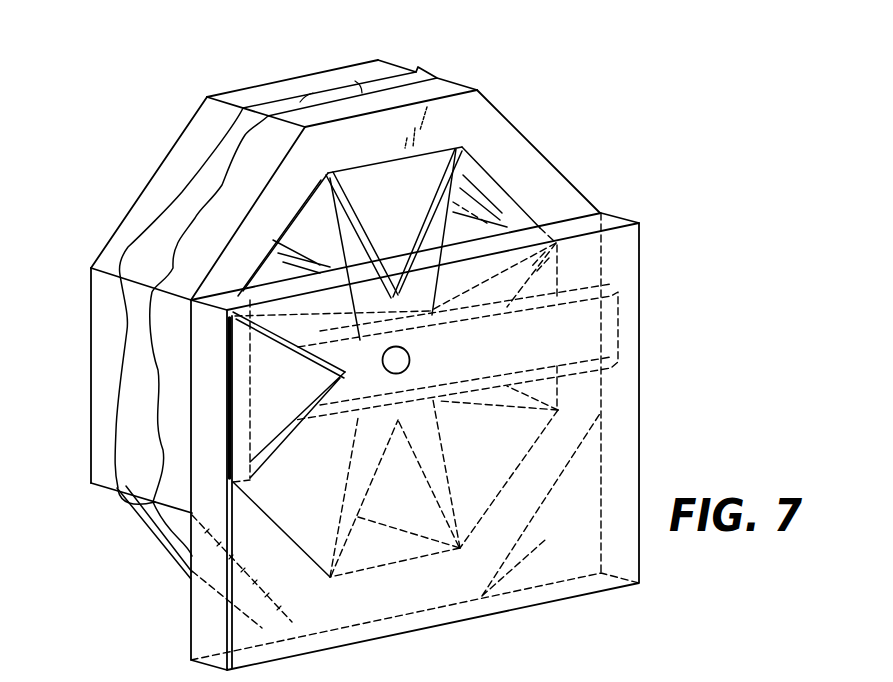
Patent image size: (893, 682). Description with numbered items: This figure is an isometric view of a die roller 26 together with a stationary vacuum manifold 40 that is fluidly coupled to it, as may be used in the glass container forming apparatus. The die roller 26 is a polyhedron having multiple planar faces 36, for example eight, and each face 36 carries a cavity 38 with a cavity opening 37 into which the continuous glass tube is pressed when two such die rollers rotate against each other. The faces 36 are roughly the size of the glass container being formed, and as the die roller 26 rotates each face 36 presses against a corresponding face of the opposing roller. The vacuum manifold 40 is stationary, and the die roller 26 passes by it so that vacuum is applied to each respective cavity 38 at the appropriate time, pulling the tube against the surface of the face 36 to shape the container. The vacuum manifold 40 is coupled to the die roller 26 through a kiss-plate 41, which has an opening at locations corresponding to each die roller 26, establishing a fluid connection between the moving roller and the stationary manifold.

The die roller 26 is at (480, 123).
The planar face 36 is at (375, 63).
The cavity opening 37 is at (332, 98).
The cavity 38 is at (270, 110).
The vacuum manifold 40 is at (639, 406).
The kiss-plate 41 is at (283, 393).